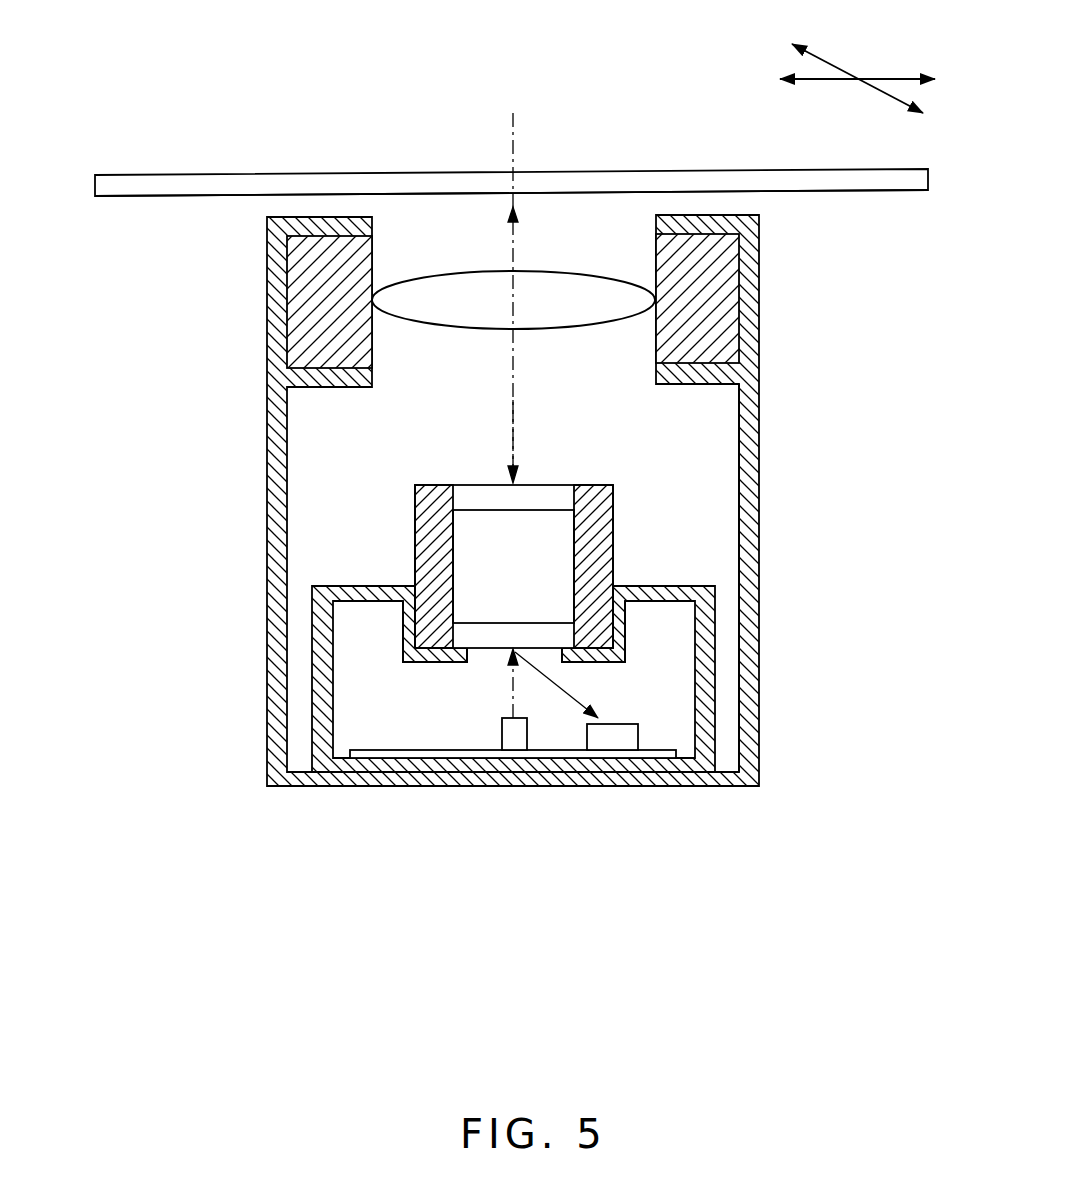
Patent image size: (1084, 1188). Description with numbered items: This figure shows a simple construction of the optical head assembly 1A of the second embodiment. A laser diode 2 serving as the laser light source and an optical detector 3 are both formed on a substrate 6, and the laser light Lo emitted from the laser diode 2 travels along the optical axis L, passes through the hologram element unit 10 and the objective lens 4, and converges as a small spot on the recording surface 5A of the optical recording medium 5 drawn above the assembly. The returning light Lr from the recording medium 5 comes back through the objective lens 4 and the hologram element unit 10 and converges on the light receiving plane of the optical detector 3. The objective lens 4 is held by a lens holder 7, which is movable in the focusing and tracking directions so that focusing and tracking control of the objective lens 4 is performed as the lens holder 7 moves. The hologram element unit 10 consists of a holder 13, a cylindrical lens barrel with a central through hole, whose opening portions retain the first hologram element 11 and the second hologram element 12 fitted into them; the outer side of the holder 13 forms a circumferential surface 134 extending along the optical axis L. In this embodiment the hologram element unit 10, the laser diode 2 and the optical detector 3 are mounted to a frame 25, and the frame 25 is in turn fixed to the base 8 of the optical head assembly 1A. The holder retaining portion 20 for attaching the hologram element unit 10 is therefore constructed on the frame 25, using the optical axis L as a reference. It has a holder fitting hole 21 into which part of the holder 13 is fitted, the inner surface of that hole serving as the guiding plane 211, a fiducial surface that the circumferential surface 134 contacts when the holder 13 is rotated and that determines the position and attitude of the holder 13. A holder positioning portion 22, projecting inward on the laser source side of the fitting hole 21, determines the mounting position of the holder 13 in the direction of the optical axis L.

The optical head assembly 1A is at (832, 285).
The laser diode 2 is at (523, 742).
The optical detector 3 is at (627, 742).
The objective lens 4 is at (417, 315).
The optical recording medium 5 is at (255, 167).
The recording surface 5A is at (247, 197).
The substrate 6 is at (387, 758).
The lens holder 7 is at (305, 342).
The base 8 is at (777, 765).
The hologram element unit 10 is at (516, 529).
The first hologram element 11 is at (553, 632).
The second hologram element 12 is at (463, 492).
The holder 13 is at (618, 522).
The circumferential surface 134 is at (405, 586).
The holder retaining portion 20 is at (398, 630).
The holder fitting hole 21 is at (623, 607).
The holder positioning portion 22 is at (597, 662).
The guiding plane 211 is at (427, 663).
The frame 25 is at (730, 680).
The optical axis L is at (512, 132).
The returning light Lr is at (517, 447).
The laser light Lo is at (512, 668).